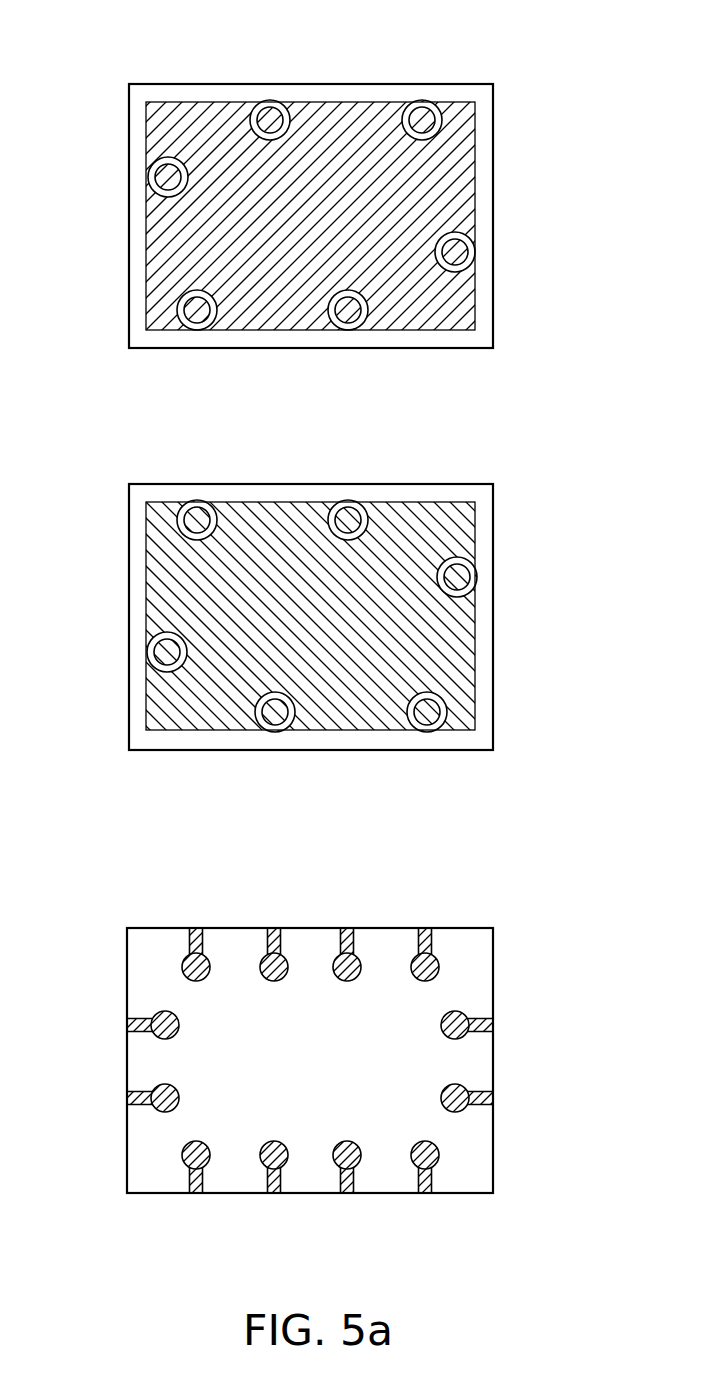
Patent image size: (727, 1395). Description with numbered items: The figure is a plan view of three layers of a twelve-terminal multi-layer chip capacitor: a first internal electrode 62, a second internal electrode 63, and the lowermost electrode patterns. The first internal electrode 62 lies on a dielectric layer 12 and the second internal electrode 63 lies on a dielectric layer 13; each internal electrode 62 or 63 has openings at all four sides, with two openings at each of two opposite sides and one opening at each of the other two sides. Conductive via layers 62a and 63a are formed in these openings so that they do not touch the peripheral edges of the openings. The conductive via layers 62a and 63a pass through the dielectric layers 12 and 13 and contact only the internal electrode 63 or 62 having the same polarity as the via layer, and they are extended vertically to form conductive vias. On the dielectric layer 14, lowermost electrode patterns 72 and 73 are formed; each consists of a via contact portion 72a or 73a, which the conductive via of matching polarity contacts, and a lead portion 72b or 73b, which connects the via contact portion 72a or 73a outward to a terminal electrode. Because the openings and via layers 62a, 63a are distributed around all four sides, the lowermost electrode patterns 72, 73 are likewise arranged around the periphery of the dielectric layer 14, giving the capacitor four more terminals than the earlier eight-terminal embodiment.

The dielectric layer 12 is at (485, 189).
The first internal electrode 62 is at (177, 240).
The conductive via layer 62a is at (271, 117).
The dielectric layer 13 is at (485, 632).
The second internal electrode 63 is at (162, 567).
The conductive via layer 63a is at (196, 512).
The dielectric layer 14 is at (465, 1057).
The lowermost electrode pattern 72 is at (363, 1046).
The via contact portion 72a is at (183, 963).
The lead portion 72b is at (192, 942).
The lowermost electrode pattern 73 is at (363, 1031).
The via contact portion 73a is at (280, 962).
The lead portion 73b is at (274, 957).